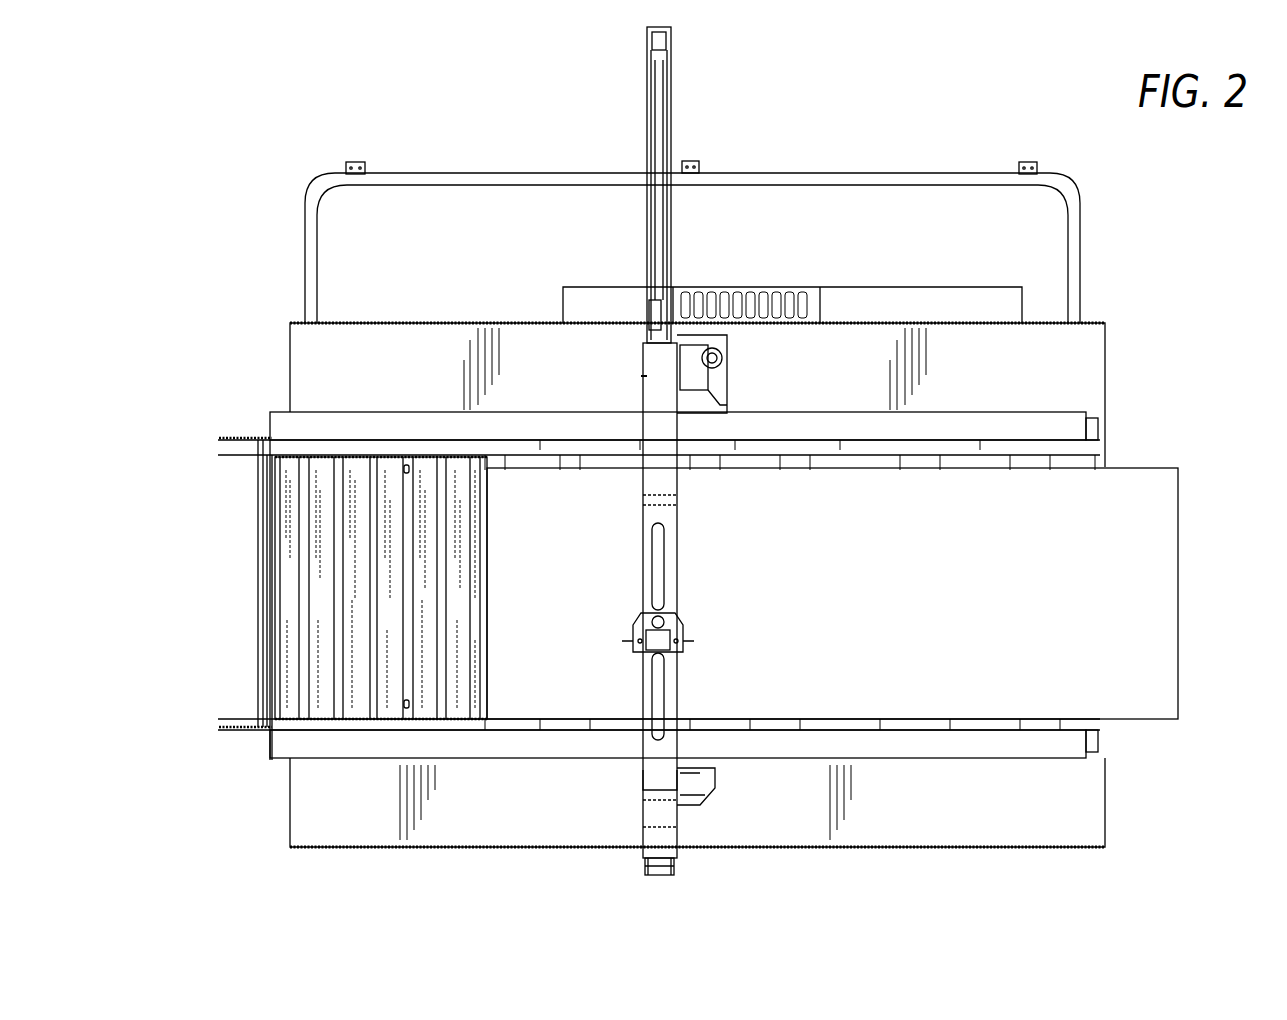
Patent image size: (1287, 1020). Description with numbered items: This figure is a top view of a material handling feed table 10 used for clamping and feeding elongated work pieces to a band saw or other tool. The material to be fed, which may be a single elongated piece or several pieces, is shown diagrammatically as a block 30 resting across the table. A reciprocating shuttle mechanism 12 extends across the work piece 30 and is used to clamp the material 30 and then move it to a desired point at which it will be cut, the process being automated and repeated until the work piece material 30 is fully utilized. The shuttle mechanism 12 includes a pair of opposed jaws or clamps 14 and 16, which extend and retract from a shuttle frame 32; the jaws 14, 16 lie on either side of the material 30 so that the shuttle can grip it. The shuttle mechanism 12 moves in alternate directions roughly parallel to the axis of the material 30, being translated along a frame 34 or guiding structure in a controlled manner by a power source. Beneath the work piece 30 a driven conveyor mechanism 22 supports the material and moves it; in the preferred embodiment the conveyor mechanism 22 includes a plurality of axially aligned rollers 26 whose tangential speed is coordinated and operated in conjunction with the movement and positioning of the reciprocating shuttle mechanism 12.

The material handling feed table 10 is at (182, 158).
The reciprocating shuttle mechanism 12 is at (657, 777).
The jaw 14 is at (576, 422).
The jaw 16 is at (573, 747).
The driven conveyor mechanism 22 is at (218, 690).
The axially aligned rollers 26 is at (318, 548).
The work piece material 30 is at (1157, 525).
The shuttle frame 32 is at (657, 372).
The frame 34 is at (305, 798).